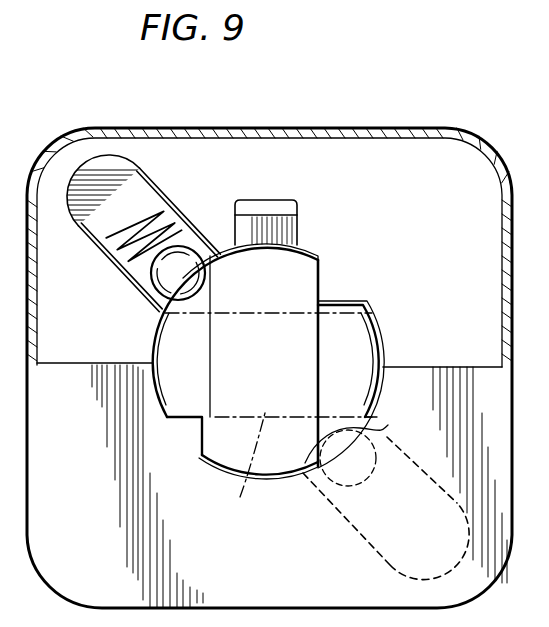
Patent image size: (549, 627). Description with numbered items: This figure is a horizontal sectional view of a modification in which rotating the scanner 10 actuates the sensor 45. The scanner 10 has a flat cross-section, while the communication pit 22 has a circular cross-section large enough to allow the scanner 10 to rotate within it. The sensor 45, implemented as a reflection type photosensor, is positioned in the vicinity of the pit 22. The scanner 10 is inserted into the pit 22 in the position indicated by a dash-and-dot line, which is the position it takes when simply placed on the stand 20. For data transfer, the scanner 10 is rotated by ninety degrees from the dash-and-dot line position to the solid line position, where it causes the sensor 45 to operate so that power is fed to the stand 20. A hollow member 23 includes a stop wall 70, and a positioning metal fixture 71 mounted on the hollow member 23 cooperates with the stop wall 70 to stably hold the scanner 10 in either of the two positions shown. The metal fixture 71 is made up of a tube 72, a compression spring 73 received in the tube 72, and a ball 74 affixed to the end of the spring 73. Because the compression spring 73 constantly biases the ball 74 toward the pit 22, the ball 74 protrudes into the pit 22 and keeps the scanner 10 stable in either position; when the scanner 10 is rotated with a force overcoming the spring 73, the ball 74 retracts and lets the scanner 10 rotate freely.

The scanner 10 is at (207, 397).
The stand 20 is at (88, 545).
The communication pit 22 is at (158, 390).
The hollow member 23 is at (385, 337).
The sensor 45 is at (253, 232).
The stop wall 70 is at (330, 284).
The positioning metal fixture 71 is at (176, 182).
The tube 72 is at (113, 256).
The compression spring 73 is at (133, 247).
The ball 74 is at (178, 275).